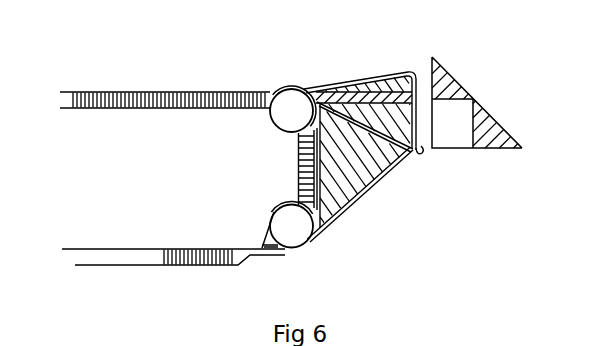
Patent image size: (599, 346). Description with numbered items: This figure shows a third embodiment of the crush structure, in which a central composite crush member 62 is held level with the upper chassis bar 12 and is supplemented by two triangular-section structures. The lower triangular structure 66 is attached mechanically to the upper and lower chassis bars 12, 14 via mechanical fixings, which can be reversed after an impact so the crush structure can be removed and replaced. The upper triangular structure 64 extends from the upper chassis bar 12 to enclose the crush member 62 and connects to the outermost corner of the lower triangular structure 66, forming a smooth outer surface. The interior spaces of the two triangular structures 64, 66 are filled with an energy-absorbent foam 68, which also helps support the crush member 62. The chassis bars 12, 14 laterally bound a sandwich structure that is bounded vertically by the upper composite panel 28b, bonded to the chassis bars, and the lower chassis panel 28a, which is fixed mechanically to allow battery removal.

The upper chassis bar 12 is at (290, 108).
The lower chassis bar 14 is at (292, 228).
The lower chassis panel 28a is at (132, 258).
The upper composite panel 28b is at (123, 95).
The central composite crush member 62 is at (366, 93).
The upper triangular structure 64 is at (418, 133).
The lower triangular structure 66 is at (365, 200).
The energy-absorbent foam 68 is at (383, 83).